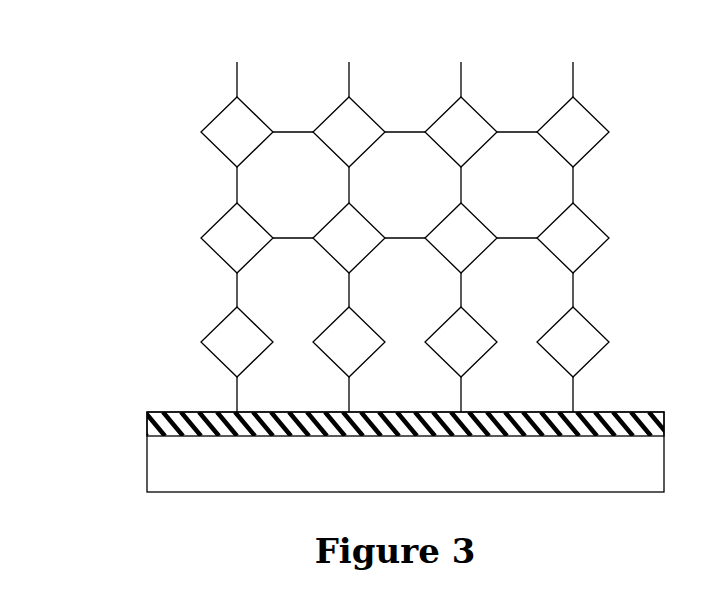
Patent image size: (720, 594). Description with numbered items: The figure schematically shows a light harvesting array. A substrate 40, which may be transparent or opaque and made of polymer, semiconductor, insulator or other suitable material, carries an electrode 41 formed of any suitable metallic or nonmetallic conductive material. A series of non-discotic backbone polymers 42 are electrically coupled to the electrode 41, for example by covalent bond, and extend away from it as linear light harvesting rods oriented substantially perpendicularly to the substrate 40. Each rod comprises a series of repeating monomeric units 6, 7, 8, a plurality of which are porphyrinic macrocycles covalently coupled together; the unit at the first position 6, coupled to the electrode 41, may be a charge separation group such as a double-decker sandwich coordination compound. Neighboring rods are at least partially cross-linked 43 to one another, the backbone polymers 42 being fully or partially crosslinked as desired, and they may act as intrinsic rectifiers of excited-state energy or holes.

The first position monomeric unit 6 is at (237, 342).
The monomeric unit 7 is at (237, 238).
The monomeric unit 8 is at (237, 132).
The substrate 40 is at (405, 452).
The electrode 41 is at (147, 428).
The non-discotic backbone polymers 42 is at (213, 198).
The cross-links 43 is at (295, 118).